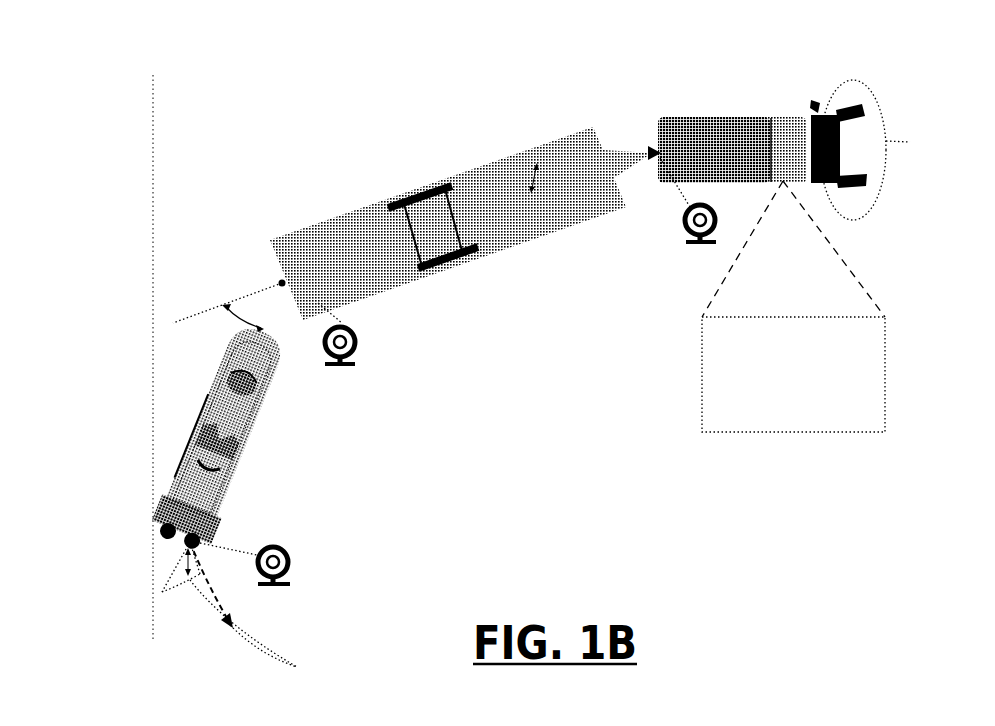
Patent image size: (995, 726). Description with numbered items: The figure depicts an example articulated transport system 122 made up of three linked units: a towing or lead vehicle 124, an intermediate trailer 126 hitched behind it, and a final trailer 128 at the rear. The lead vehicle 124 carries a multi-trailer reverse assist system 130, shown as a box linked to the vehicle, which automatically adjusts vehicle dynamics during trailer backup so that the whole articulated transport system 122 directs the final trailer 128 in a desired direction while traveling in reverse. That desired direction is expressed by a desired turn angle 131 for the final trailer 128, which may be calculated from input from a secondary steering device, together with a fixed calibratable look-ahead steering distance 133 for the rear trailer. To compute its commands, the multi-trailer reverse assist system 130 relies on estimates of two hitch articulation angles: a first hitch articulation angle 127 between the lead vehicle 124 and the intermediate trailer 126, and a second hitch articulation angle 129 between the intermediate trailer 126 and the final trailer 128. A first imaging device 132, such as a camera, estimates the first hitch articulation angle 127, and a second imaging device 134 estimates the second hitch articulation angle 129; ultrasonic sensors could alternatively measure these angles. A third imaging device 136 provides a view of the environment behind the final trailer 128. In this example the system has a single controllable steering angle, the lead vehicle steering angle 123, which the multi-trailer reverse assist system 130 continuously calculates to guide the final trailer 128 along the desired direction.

The articulated transport system 122 is at (645, 107).
The lead vehicle steering angle 123 is at (868, 234).
The lead vehicle 124 is at (763, 108).
The intermediate trailer 126 is at (440, 170).
The first hitch articulation angle 127 is at (553, 171).
The final trailer 128 is at (175, 493).
The second hitch articulation angle 129 is at (224, 332).
The multi-trailer reverse assist system 130 is at (793, 306).
The desired turn angle 131 is at (175, 620).
The first imaging device 132 is at (683, 226).
The look-ahead steering distance 133 is at (263, 596).
The second imaging device 134 is at (358, 345).
The third imaging device 136 is at (290, 556).